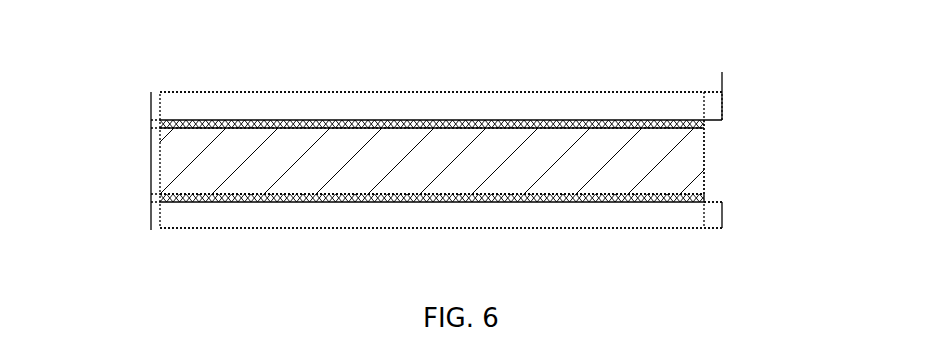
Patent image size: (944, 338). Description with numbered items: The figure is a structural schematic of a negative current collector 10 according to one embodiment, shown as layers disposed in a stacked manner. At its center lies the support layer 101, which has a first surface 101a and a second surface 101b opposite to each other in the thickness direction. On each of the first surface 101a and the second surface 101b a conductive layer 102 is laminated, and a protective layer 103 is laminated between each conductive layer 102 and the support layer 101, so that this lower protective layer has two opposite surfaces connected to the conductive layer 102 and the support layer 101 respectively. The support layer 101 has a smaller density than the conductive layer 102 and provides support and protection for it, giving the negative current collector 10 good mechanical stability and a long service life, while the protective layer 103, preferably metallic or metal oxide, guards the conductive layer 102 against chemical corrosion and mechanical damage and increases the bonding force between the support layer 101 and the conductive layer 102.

The negative current collector 10 is at (444, 33).
The support layer 101 is at (176, 154).
The first surface 101a is at (273, 122).
The second surface 101b is at (262, 198).
The conductive layer 102 is at (697, 104).
The protective layer 103 is at (712, 124).